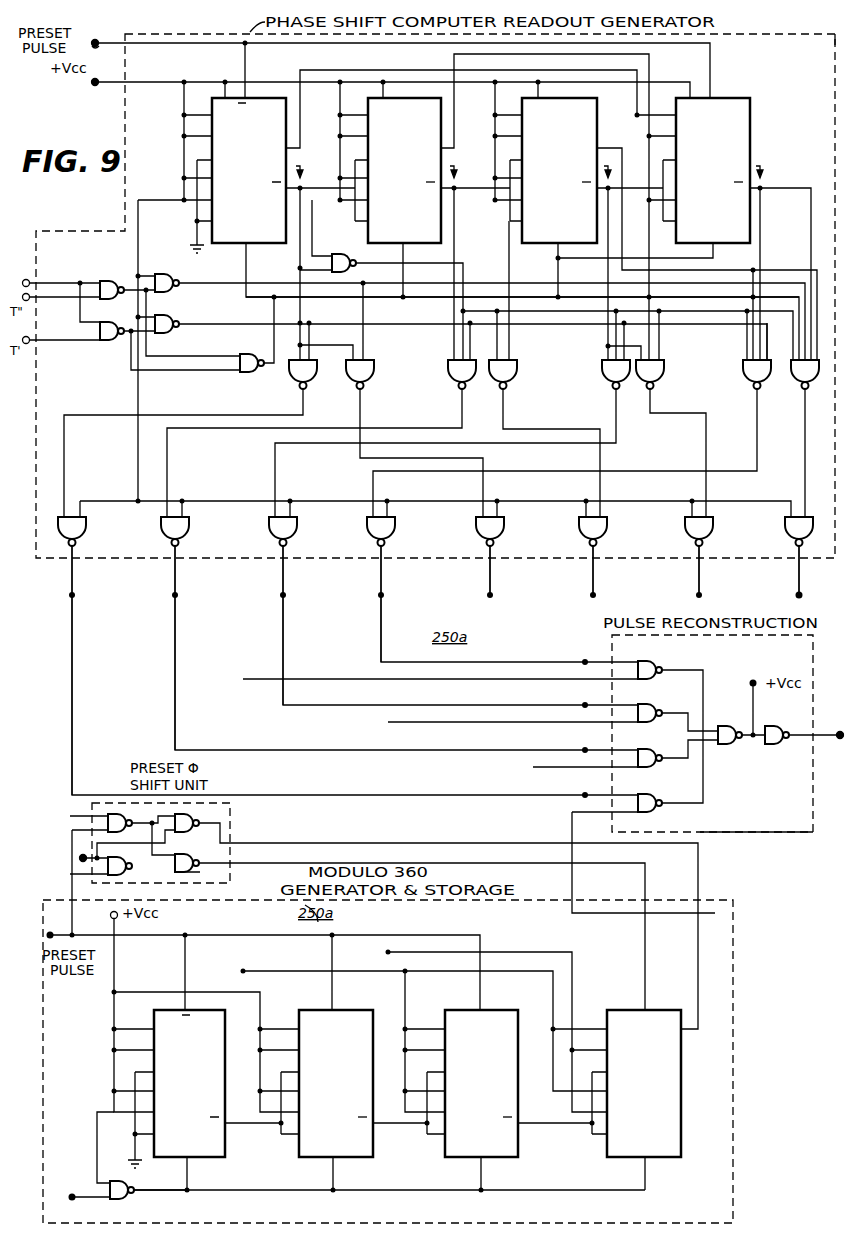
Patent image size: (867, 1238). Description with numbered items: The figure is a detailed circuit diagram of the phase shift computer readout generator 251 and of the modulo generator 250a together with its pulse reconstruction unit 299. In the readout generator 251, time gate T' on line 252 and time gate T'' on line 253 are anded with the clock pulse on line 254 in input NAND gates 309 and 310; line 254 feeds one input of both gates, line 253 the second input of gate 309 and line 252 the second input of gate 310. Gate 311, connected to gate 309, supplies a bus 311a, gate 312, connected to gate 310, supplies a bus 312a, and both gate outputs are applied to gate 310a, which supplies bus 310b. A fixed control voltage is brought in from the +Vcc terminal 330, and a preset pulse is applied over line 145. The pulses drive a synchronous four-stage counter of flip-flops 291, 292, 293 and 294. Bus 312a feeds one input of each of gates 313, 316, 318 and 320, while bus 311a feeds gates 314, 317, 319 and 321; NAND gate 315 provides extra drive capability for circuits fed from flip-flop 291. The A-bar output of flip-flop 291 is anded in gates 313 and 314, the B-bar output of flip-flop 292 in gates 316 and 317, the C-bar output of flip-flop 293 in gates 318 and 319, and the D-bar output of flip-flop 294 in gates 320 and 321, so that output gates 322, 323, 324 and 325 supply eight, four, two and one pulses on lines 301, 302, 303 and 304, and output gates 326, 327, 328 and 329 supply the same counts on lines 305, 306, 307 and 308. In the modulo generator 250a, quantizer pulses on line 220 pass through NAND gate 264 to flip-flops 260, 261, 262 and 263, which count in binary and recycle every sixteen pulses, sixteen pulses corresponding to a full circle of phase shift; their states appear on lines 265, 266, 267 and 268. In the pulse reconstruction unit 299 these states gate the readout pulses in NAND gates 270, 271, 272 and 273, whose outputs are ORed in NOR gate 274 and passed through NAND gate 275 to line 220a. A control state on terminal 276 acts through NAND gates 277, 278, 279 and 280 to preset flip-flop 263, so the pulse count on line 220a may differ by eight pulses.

The preset pulse line 145 is at (60, 933).
The +Vcc terminal 330 is at (96, 86).
The phase shift computer readout generator 251 is at (822, 34).
The input line 252 is at (30, 338).
The input line 253 is at (30, 297).
The input line 254 is at (30, 280).
The input NAND gate 309 is at (128, 265).
The input NAND gate 310 is at (112, 340).
The NAND gate 311 is at (168, 276).
The NAND gate 312 is at (168, 317).
The bus 311a is at (240, 284).
The bus 312a is at (240, 325).
The NAND gate 310a is at (245, 374).
The bus 310b is at (310, 297).
The NAND gate 315 is at (352, 254).
The NAND gate 313 is at (310, 388).
The NAND gate 314 is at (368, 388).
The NAND gate 316 is at (466, 385).
The NAND gate 317 is at (508, 388).
The NAND gate 318 is at (612, 386).
The NAND gate 319 is at (656, 388).
The NAND gate 320 is at (752, 386).
The NAND gate 321 is at (802, 386).
The output gate 322 is at (84, 536).
The output gate 323 is at (187, 536).
The output gate 324 is at (295, 536).
The output gate 325 is at (393, 536).
The output gate 326 is at (502, 536).
The output gate 327 is at (605, 536).
The output gate 328 is at (711, 536).
The output gate 329 is at (786, 530).
The output line 301 is at (75, 596).
The output line 302 is at (178, 596).
The output line 303 is at (286, 596).
The output line 304 is at (384, 596).
The output line 305 is at (493, 596).
The output line 306 is at (596, 596).
The output line 307 is at (702, 596).
The output line 308 is at (798, 592).
The flip-flop 291 is at (249, 170).
The flip-flop 292 is at (404, 170).
The flip-flop 293 is at (559, 170).
The flip-flop 294 is at (713, 170).
The NAND gate 270 is at (652, 662).
The NAND gate 271 is at (652, 704).
The NAND gate 272 is at (652, 767).
The NAND gate 273 is at (652, 812).
The NOR gate 274 is at (724, 744).
The NAND gate 275 is at (773, 744).
The output line 220a is at (838, 732).
The pulse reconstruction unit 299 is at (745, 832).
The output line 265 is at (340, 680).
The output line 266 is at (437, 723).
The output line 267 is at (598, 768).
The output line 268 is at (626, 914).
The NAND gate 277 is at (80, 816).
The NAND gate 278 is at (80, 874).
The control terminal 276 is at (81, 856).
The NAND gate 279 is at (200, 814).
The NAND gate 280 is at (200, 872).
The flip-flop 260 is at (189, 1083).
The flip-flop 261 is at (336, 1083).
The flip-flop 262 is at (481, 1083).
The flip-flop 263 is at (644, 1083).
The NAND gate 264 is at (140, 1190).
The input line 220 is at (95, 1205).
The modulo-360 generator 250a is at (451, 637).